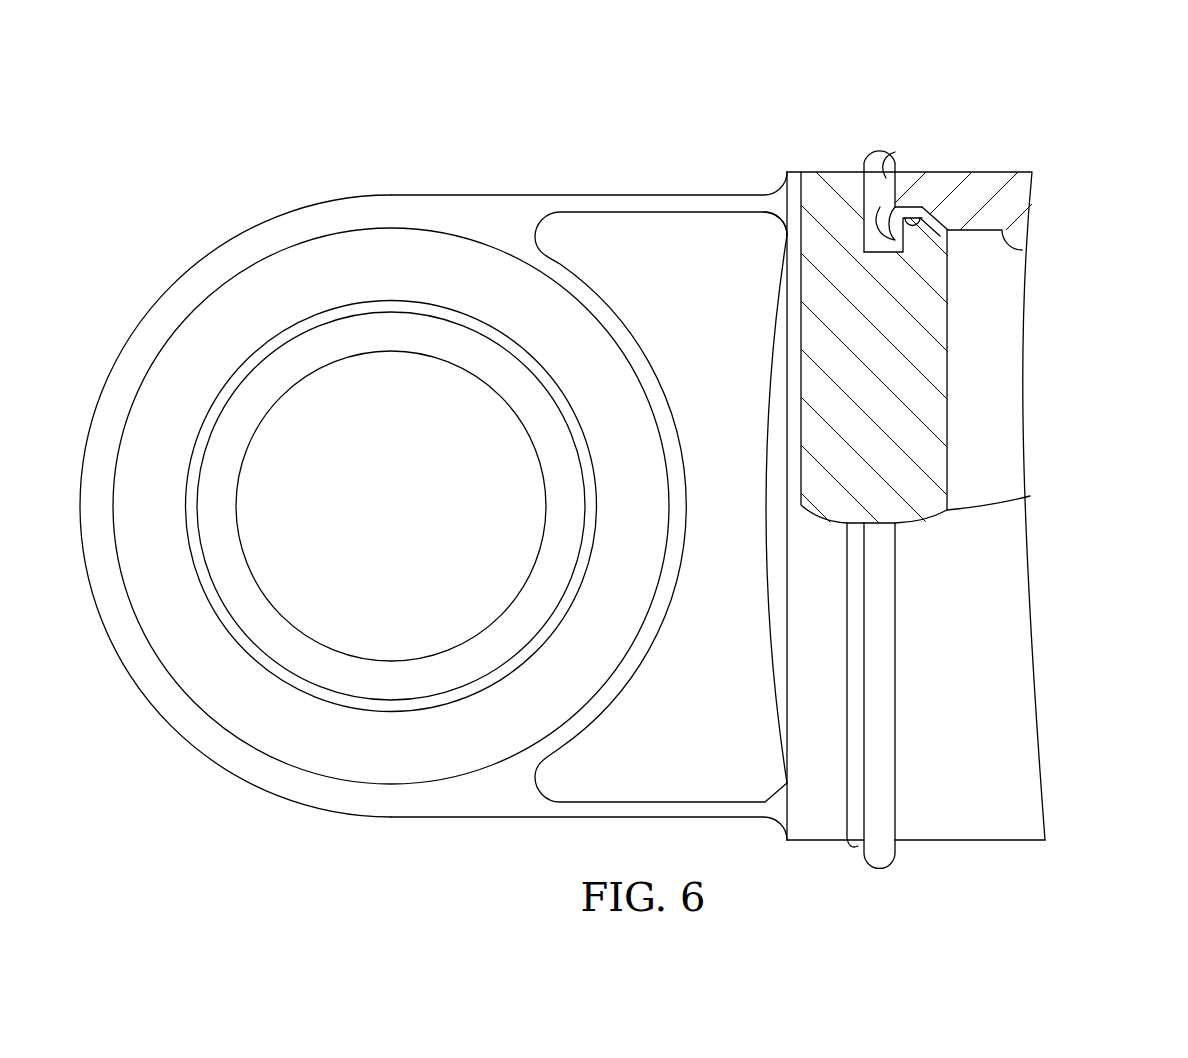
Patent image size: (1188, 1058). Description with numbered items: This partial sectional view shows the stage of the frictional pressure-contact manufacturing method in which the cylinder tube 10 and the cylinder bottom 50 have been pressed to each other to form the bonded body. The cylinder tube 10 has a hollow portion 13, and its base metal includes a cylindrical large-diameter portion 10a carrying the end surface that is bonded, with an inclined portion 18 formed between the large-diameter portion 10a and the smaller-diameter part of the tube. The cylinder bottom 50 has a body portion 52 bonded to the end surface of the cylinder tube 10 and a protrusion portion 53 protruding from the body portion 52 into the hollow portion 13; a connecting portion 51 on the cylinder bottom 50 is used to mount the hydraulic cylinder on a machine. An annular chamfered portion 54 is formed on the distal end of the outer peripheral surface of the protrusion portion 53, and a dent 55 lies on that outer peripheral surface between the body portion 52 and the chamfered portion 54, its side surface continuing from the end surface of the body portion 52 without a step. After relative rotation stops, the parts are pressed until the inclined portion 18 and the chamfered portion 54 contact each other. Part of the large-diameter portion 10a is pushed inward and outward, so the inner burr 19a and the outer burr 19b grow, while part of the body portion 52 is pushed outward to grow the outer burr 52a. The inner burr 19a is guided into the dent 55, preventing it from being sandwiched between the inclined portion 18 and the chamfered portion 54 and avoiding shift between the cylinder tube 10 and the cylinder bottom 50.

The cylinder tube 10 is at (1024, 160).
The large-diameter portion 10a is at (907, 183).
The hollow portion 13 is at (1022, 251).
The inclined portion 18 is at (903, 200).
The inner burr 19a is at (852, 163).
The outer burr 19b is at (878, 147).
The cylinder bottom 50 is at (410, 188).
The connecting portion 51 is at (308, 757).
The body portion 52 is at (818, 218).
The outer burr 52a is at (862, 232).
The protrusion portion 53 is at (925, 368).
The chamfered portion 54 is at (933, 225).
The dent 55 is at (782, 234).